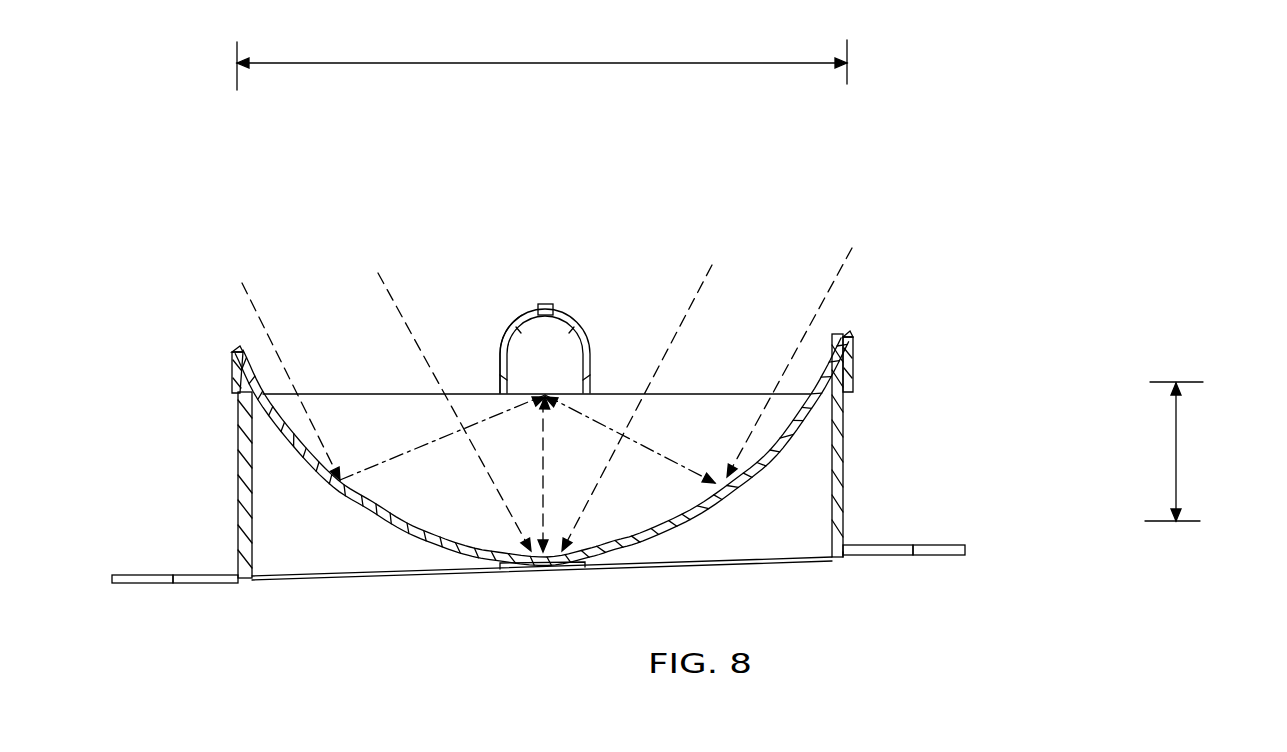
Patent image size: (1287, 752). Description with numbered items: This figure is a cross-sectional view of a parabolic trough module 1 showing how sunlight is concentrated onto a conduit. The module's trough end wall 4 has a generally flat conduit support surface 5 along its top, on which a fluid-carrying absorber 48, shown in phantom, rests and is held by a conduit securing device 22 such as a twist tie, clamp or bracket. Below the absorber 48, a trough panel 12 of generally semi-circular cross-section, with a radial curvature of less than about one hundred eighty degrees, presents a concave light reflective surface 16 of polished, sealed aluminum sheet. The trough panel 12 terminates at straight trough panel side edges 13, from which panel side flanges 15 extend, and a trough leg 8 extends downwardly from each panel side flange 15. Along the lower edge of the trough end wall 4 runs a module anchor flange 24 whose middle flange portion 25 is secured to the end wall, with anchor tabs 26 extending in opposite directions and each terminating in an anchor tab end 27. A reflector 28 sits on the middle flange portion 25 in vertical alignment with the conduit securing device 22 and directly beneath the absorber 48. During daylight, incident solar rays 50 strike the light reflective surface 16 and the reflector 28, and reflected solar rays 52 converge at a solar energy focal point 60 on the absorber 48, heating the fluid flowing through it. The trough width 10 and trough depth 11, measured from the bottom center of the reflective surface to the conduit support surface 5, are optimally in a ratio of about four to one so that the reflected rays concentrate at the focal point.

The parabolic trough module 1 is at (216, 188).
The trough end wall 4 is at (585, 470).
The conduit support surface 5 is at (728, 393).
The trough leg 8 is at (237, 502).
The trough width 10 is at (522, 63).
The trough depth 11 is at (1176, 455).
The trough panel 12 is at (783, 428).
The trough panel side edge 13 is at (232, 340).
The panel side flange 15 is at (230, 368).
The light reflective surface 16 is at (413, 521).
The conduit securing device 22 is at (515, 322).
The module anchor flange 24 is at (866, 546).
The middle flange portion 25 is at (462, 572).
The anchor tab 26 is at (205, 583).
The anchor tab end 27 is at (160, 583).
The reflector 28 is at (500, 570).
The absorber 48 is at (507, 320).
The incident solar rays 50 is at (277, 357).
The reflected solar rays 52 is at (540, 465).
The solar energy focal point 60 is at (545, 395).